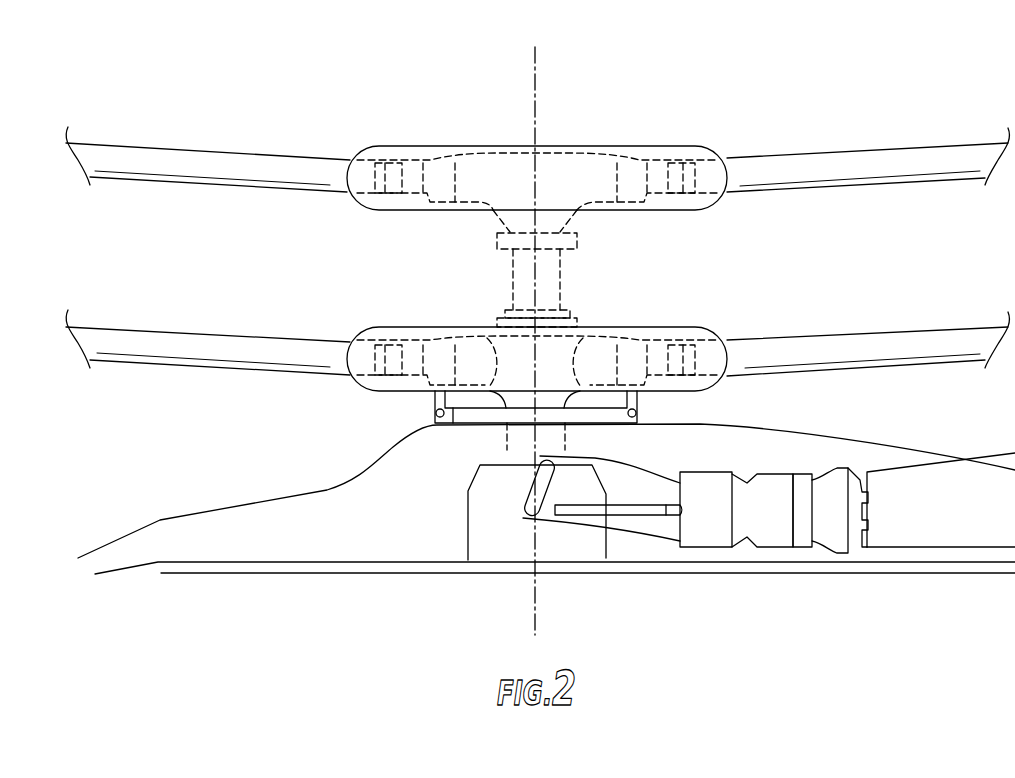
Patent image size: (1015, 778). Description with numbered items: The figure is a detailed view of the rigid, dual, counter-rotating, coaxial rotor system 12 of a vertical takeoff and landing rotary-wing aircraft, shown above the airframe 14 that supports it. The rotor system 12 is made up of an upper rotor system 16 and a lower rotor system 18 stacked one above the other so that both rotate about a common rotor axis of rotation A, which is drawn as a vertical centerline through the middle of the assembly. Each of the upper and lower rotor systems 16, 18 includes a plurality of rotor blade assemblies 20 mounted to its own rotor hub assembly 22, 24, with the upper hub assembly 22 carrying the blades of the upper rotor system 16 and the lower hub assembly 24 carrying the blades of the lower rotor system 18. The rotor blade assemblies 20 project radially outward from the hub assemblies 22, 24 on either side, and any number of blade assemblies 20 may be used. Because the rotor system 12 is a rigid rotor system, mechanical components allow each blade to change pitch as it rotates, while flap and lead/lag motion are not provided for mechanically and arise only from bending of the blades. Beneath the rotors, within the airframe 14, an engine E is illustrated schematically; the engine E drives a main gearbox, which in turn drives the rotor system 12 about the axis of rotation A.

The dual, counter-rotating, coaxial rotor system 12 is at (540, 355).
The airframe 14 is at (293, 558).
The upper rotor system 16 is at (537, 151).
The lower rotor system 18 is at (727, 328).
The rotor blade assemblies 20 is at (853, 172).
The rotor hub assembly 22 is at (563, 155).
The rotor hub assembly 24 is at (565, 385).
The axis of rotation A is at (535, 60).
The engine E is at (707, 527).